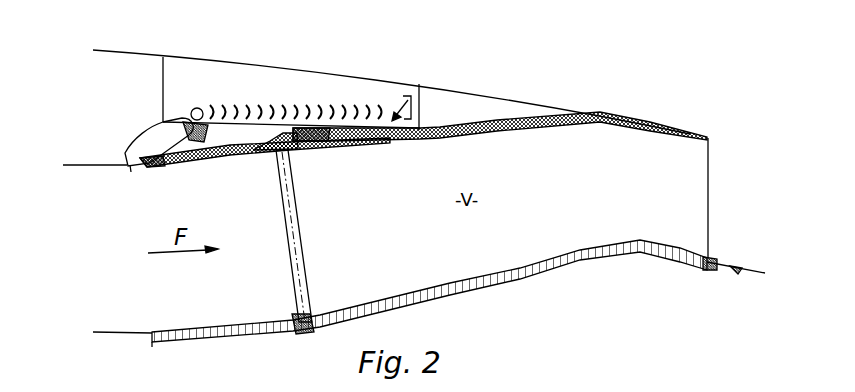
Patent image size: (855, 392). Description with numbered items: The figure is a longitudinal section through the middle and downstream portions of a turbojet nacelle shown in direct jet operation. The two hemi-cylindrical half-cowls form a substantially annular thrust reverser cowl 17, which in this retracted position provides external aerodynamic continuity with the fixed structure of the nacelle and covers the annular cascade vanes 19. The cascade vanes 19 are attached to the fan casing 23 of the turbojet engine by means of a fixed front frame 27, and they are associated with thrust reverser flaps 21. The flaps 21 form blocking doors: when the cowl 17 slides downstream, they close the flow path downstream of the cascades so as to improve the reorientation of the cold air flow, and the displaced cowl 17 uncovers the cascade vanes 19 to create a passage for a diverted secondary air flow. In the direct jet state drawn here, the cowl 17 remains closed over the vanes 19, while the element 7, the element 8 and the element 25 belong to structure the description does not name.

The strut / outlet guide vane 7 is at (315, 330).
The inner fixed structure wall 8 is at (236, 342).
The thrust reverser cowl 17 is at (375, 77).
The cascade vanes 19 is at (268, 110).
The thrust reverser flaps 21 is at (222, 162).
The fan casing 23 is at (90, 165).
The nacelle outer skin 25 is at (135, 50).
The fixed front frame 27 is at (195, 107).